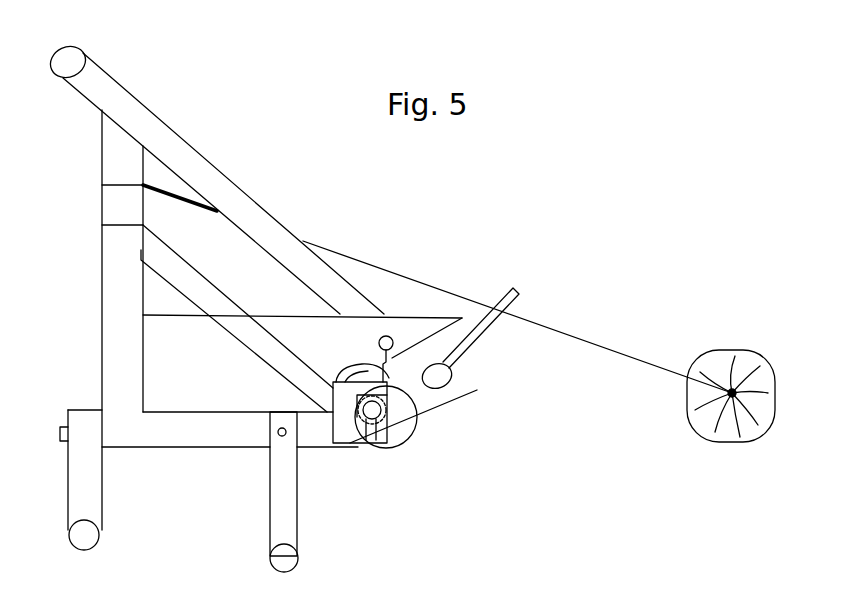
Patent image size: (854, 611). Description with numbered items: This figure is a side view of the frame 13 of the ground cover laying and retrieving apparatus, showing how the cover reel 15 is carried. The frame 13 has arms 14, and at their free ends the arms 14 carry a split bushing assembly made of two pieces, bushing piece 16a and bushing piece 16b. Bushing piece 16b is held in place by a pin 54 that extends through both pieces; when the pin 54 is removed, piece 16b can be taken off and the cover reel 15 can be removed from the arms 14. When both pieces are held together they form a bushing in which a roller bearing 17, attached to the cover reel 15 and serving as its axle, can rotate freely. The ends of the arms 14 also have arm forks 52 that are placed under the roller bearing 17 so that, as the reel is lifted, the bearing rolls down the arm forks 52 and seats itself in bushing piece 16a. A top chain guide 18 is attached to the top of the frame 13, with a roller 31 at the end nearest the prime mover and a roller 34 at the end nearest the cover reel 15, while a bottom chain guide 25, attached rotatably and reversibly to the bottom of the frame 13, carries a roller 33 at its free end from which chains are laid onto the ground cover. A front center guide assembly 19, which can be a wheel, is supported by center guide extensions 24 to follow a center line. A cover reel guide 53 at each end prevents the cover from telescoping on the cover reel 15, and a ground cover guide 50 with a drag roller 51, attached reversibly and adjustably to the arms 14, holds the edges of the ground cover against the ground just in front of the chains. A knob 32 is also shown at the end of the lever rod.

The frame 13 is at (120, 324).
The arms 14 is at (200, 430).
The cover reel 15 is at (410, 432).
The bushing piece 16a is at (347, 430).
The bushing piece 16b is at (402, 430).
The roller bearing 17 is at (375, 442).
The top chain guide 18 is at (217, 163).
The front center guide assembly 19 is at (733, 347).
The center guide extensions 24 is at (563, 332).
The bottom chain guide 25 is at (83, 473).
The roller 31 is at (80, 50).
The lever knob 32 is at (452, 377).
The roller 33 is at (87, 533).
The roller 34 is at (508, 290).
The ground cover guide 50 is at (285, 503).
The drag roller 51 is at (292, 556).
The arm forks 52 is at (450, 403).
The cover reel guide 53 is at (150, 376).
The pin 54 is at (377, 342).